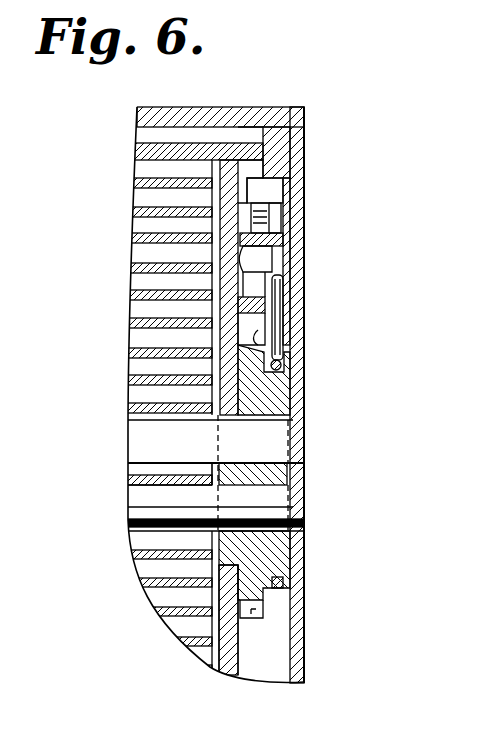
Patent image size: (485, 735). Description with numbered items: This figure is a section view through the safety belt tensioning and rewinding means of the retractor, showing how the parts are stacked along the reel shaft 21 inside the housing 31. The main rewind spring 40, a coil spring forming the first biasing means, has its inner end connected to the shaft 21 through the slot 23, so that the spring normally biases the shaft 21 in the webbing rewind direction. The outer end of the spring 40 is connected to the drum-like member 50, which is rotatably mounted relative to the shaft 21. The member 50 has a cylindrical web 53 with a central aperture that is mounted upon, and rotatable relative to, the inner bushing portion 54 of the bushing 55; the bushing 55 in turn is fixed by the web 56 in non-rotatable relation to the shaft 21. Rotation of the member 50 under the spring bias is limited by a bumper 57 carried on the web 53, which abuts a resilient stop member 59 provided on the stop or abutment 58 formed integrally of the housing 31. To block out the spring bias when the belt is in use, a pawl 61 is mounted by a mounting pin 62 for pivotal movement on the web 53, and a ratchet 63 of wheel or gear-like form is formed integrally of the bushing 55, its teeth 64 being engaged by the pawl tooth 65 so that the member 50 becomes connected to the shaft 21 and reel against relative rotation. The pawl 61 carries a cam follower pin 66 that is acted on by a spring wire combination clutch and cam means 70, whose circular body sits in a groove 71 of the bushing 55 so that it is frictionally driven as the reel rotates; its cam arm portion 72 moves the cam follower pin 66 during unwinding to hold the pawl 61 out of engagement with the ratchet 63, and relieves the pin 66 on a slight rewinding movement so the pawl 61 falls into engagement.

The shaft 21 is at (146, 493).
The slot 23 is at (140, 474).
The housing 31 is at (276, 108).
The main rewind spring 40 is at (140, 260).
The member 50 is at (140, 142).
The cylindrical web 53 is at (228, 168).
The inner bushing portion 54 is at (238, 392).
The bushing 55 is at (262, 550).
The web 56 is at (276, 474).
The bumper 57 is at (262, 208).
The stop or abutment 58 is at (270, 178).
The resilient stop member 59 is at (272, 226).
The pawl 61 is at (256, 254).
The mounting pin 62 is at (262, 266).
The ratchet 63 is at (258, 343).
The teeth 64 is at (252, 618).
The pawl tooth 65 is at (300, 434).
The cam follower pin 66 is at (293, 390).
The combination clutch and cam means 70 is at (284, 365).
The groove 71 is at (284, 582).
The cam arm portion 72 is at (280, 293).